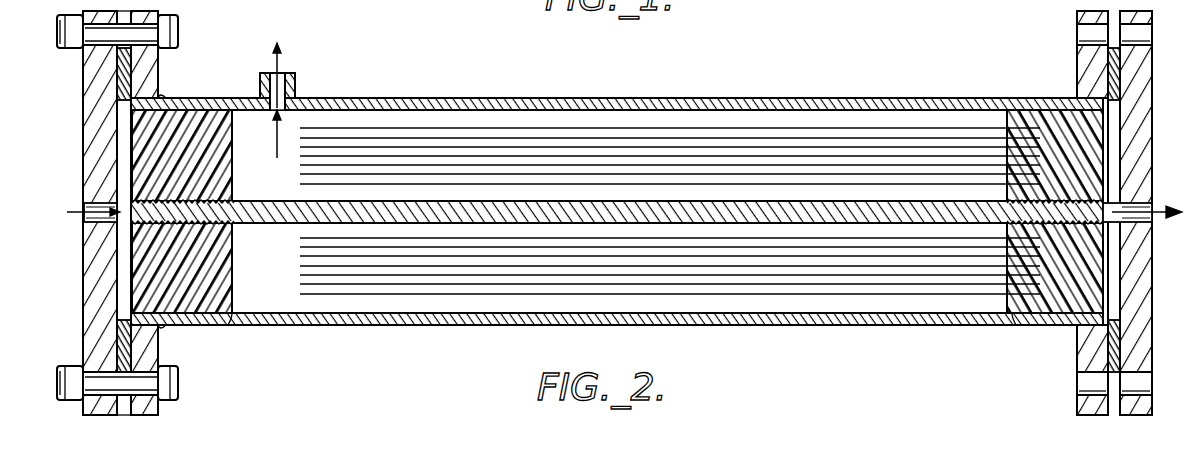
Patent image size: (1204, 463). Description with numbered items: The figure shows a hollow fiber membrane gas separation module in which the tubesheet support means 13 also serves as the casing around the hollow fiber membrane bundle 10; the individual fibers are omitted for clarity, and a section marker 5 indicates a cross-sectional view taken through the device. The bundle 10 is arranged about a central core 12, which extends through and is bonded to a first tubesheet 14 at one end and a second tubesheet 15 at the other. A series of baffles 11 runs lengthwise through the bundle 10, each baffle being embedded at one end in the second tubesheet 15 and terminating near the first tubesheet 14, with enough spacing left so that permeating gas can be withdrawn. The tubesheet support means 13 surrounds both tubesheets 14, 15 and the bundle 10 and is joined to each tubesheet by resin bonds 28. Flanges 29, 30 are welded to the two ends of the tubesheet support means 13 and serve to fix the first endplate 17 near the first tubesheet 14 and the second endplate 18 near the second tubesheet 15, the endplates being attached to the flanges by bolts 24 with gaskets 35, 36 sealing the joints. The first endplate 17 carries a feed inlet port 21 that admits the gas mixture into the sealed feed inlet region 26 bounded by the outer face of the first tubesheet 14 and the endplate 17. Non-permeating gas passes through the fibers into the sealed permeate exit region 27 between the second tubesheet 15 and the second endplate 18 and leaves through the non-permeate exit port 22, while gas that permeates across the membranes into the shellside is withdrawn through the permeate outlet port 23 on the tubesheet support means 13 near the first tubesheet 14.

The section line 5- 5 is at (493, 97).
The hollow fiber membrane bundle 10 is at (264, 193).
The baffles 11 is at (822, 128).
The core 12 is at (135, 215).
The tubesheet support means 13 is at (558, 99).
The first tubesheet 14 is at (145, 165).
The second tubesheet 15 is at (1095, 156).
The first endplate 17 is at (90, 141).
The second endplate 18 is at (1145, 116).
The feed inlet port 21 is at (83, 205).
The non-permeate exit port 22 is at (1150, 200).
The permeate outlet port 23 is at (297, 90).
The bolts 24 is at (175, 32).
The feed inlet region 26 is at (123, 262).
The permeate exit region 27 is at (1115, 232).
The resin bonds 28 is at (229, 326).
The flange 29 is at (152, 62).
The flange 30 is at (1080, 16).
The gasket 35 is at (116, 60).
The gasket 36 is at (1116, 68).